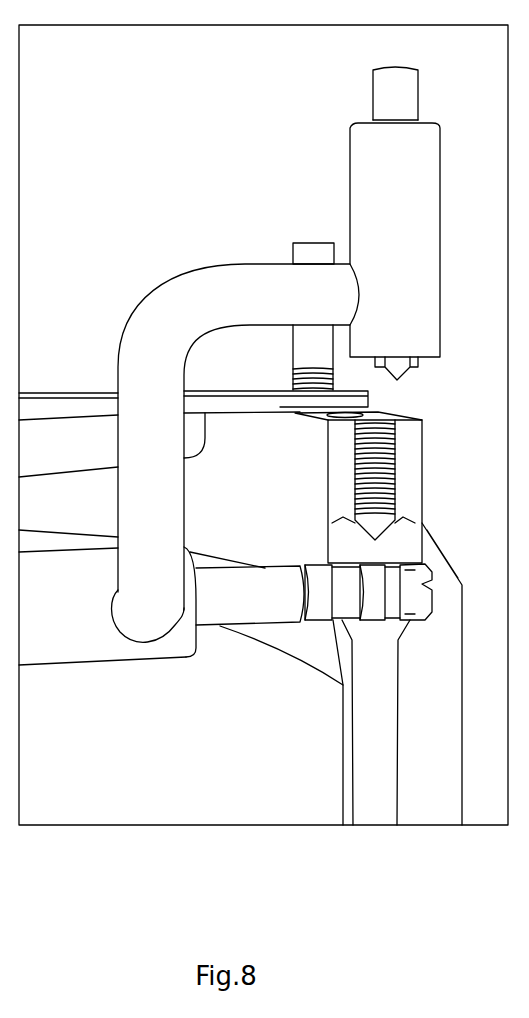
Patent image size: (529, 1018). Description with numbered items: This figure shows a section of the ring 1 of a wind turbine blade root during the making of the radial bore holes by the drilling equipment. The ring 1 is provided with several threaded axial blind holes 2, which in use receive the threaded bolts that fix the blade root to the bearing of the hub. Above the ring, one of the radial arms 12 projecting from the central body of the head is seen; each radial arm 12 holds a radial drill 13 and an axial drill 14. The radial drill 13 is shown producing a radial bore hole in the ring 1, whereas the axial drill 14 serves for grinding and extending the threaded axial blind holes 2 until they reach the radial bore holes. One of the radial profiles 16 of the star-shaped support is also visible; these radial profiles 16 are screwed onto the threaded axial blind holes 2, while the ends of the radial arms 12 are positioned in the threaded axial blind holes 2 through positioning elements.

The ring 1 is at (236, 415).
The threaded axial blind holes 2 is at (275, 278).
The radial arms 12 is at (193, 572).
The radial drill 13 is at (323, 618).
The axial drill 14 is at (421, 223).
The radial profiles 16 is at (263, 425).